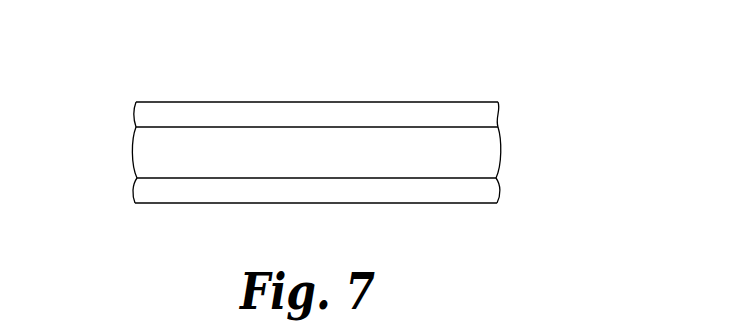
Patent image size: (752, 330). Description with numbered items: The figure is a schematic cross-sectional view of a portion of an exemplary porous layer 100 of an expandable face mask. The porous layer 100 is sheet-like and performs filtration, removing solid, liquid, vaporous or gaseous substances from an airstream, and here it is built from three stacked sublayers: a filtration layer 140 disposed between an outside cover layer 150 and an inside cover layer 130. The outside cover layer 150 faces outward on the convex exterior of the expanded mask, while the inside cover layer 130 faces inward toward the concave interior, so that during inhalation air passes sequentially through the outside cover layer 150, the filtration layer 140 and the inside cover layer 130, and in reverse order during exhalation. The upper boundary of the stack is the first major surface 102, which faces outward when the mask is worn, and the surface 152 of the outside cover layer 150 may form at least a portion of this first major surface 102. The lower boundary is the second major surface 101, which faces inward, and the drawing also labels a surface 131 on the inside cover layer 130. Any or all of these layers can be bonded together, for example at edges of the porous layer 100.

The porous layer 100 is at (458, 66).
The second major surface 101 is at (212, 203).
The first major surface 102 is at (218, 102).
The inside cover layer 130 is at (145, 192).
The outer surface of bottom layer 131 is at (282, 203).
The filtration layer 140 is at (145, 157).
The outside cover layer 150 is at (145, 119).
The surface of outside cover layer 152 is at (288, 102).